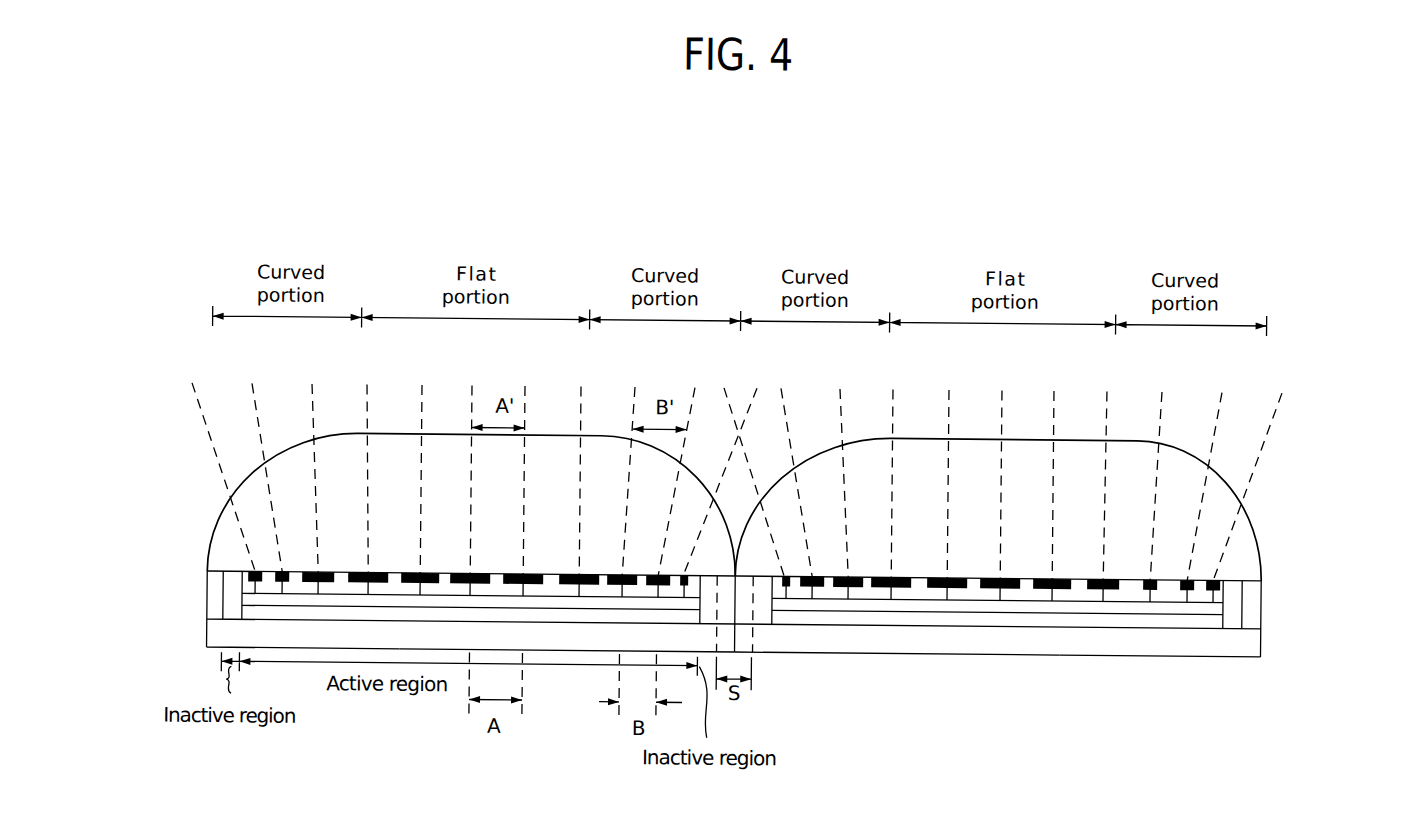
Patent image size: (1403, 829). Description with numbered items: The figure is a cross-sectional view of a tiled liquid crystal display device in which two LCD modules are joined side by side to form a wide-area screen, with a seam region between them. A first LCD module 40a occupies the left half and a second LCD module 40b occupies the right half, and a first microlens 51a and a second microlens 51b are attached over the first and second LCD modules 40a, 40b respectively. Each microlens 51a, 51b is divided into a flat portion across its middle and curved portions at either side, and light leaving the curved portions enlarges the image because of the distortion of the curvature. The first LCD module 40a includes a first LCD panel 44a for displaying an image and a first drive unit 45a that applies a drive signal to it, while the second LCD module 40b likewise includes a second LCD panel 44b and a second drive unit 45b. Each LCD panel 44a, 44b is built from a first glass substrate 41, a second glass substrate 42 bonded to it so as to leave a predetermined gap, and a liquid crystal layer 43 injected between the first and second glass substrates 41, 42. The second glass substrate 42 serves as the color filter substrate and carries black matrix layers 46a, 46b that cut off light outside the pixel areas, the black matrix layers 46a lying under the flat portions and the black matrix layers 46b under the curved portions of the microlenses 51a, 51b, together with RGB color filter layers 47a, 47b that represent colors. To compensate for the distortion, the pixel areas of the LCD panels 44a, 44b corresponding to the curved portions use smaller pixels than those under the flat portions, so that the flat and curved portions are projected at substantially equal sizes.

The first LCD module 40a is at (153, 704).
The second LCD module 40b is at (1383, 622).
The first glass substrate 41 is at (248, 623).
The second glass substrate 42 is at (227, 590).
The liquid crystal layer 43 is at (247, 605).
The first LCD panel 44a is at (152, 573).
The second LCD panel 44b is at (1318, 575).
The first drive unit 45a is at (203, 650).
The second drive unit 45b is at (1258, 640).
The black matrix layer 46a is at (1012, 590).
The black matrix layer 46b is at (1190, 588).
The RGB color filter layer 47a is at (1033, 595).
The RGB color filter layer 47b is at (1202, 593).
The first microlens 51a is at (217, 527).
The second microlens 51b is at (1251, 528).